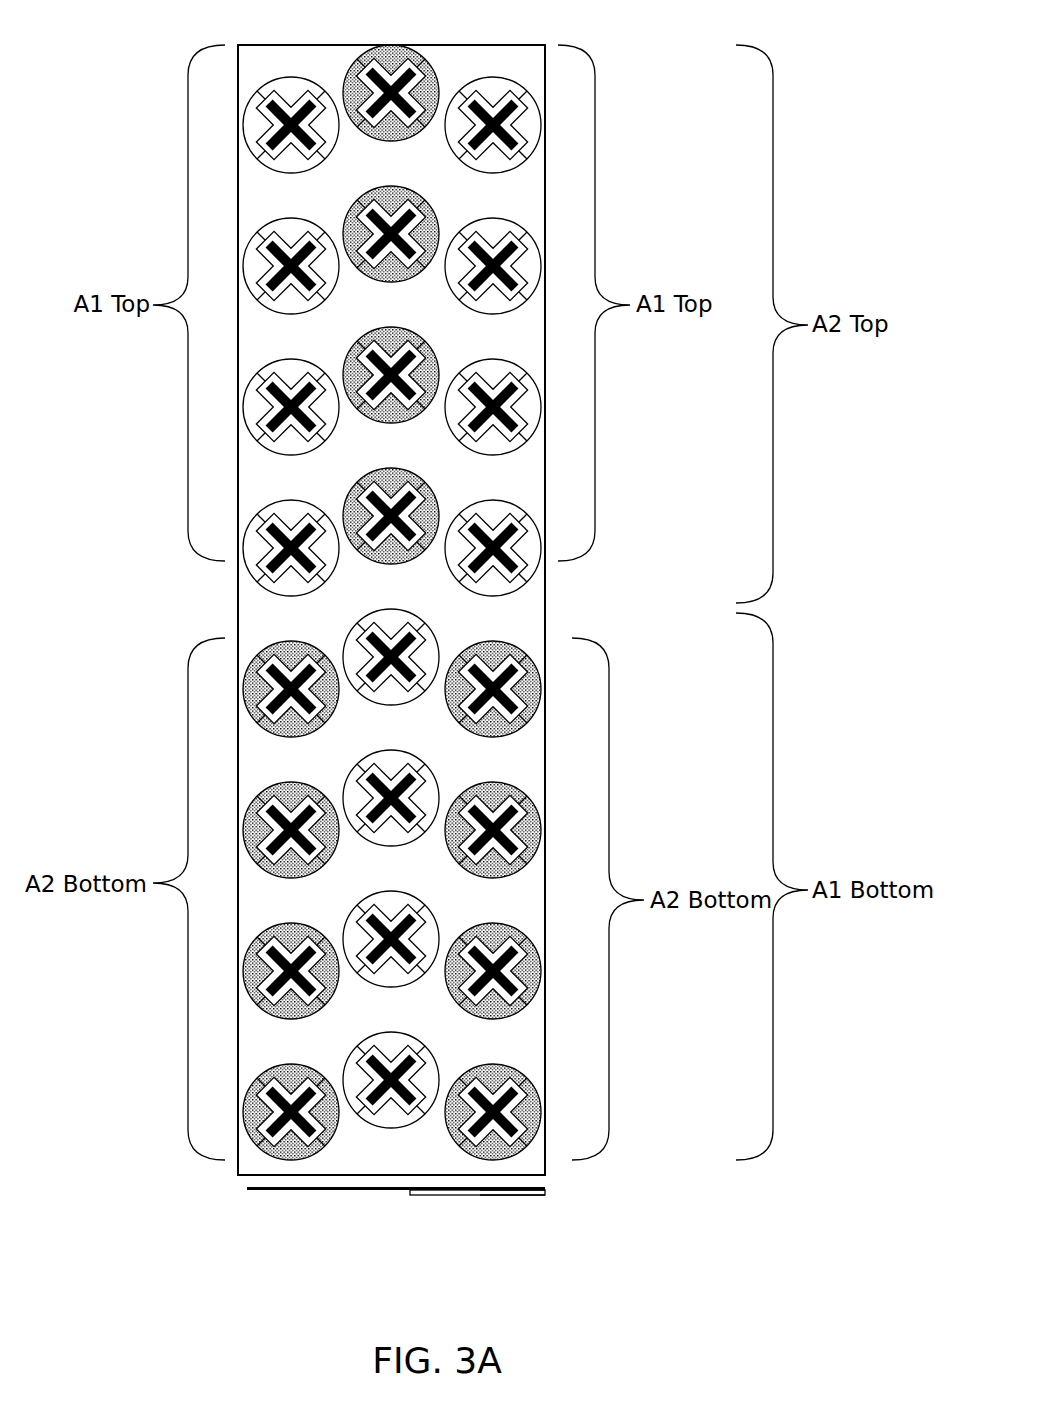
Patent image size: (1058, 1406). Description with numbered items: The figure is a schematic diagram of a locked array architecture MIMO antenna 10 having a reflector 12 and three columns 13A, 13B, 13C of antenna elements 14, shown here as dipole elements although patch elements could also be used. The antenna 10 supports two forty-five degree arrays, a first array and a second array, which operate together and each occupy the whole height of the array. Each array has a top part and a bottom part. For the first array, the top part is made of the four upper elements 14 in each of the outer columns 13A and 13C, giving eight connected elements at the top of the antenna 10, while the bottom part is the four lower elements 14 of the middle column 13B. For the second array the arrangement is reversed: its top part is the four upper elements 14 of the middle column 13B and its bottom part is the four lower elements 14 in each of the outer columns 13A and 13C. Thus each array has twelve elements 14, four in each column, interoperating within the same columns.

The antenna 10 is at (115, 51).
The reflector 12 is at (270, 600).
The first outer column 13A is at (294, 1206).
The middle column 13B is at (416, 1206).
The second outer column 13C is at (508, 1206).
The antenna element 14 is at (505, 836).